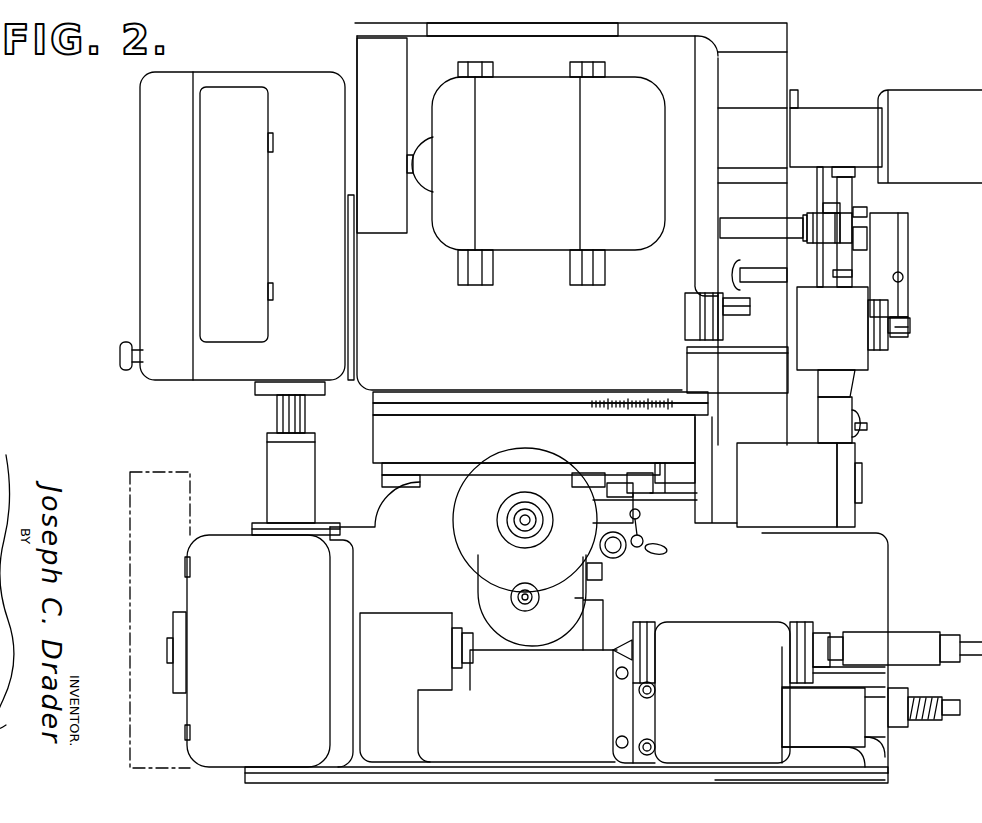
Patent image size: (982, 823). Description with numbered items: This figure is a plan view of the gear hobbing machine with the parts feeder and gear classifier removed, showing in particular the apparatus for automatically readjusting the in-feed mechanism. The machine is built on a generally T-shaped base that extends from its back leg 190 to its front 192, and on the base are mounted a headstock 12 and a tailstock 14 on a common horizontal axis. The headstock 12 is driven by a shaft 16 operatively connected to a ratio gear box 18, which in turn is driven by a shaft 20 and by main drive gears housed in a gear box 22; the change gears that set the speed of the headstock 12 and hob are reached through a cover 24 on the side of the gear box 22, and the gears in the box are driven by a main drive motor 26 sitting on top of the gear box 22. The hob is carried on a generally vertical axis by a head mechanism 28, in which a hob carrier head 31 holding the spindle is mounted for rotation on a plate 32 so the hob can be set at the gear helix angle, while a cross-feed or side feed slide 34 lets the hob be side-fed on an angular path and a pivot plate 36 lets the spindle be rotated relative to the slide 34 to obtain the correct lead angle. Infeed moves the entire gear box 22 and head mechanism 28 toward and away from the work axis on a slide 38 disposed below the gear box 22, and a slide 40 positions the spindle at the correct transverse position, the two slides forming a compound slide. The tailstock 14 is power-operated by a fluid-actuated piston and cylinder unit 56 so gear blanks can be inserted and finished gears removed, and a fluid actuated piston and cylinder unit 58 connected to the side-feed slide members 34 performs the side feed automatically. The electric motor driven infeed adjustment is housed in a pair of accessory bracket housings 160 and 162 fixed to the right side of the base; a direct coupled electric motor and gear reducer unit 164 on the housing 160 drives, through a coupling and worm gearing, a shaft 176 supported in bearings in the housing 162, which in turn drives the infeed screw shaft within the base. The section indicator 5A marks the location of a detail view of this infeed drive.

The headstock 12 is at (440, 693).
The tailstock 14 is at (702, 622).
The shaft 16 is at (277, 413).
The ratio gear box 18 is at (175, 248).
The shaft 20 is at (357, 240).
The gear box 22 is at (535, 338).
The cover 24 is at (712, 78).
The main drive motor 26 is at (532, 151).
The head mechanism 28 is at (470, 568).
The hob carrier head 31 is at (392, 447).
The plate 32 is at (373, 407).
The cross-feed or side feed slide 34 is at (412, 491).
The pivot plate 36 is at (414, 503).
The slide 38 is at (780, 396).
The slide 40 is at (890, 237).
The fluid-actuated piston and cylinder unit 56 is at (898, 642).
The fluid actuated piston and cylinder unit 58 is at (800, 481).
The accessory bracket housing 160 is at (848, 140).
The accessory bracket housing 162 is at (848, 321).
The direct coupled electric motor and gear reducer unit 164 is at (950, 133).
The shaft 176 is at (855, 193).
The back leg 190 is at (793, 72).
The front 192 is at (898, 578).
The section indicator 5A is at (876, 361).